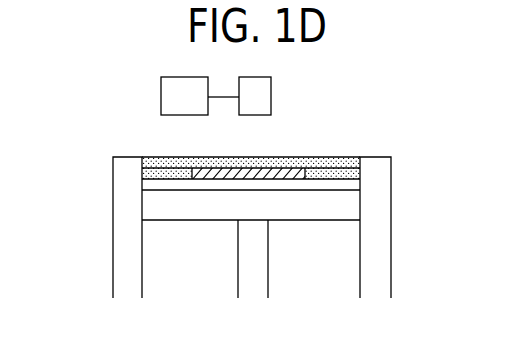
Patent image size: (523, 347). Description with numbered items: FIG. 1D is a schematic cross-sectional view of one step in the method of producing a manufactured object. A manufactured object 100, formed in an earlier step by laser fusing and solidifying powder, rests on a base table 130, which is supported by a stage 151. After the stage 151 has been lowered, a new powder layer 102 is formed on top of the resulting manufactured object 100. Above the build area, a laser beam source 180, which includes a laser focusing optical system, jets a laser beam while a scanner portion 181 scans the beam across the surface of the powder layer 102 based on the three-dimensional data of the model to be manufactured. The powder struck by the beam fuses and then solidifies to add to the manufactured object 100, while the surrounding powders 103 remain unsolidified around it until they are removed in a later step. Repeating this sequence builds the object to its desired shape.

The manufactured object 100 is at (207, 172).
The powder layer 102 is at (284, 160).
The powders which have remained unsolidified 103 is at (335, 167).
The base table 130 is at (357, 185).
The stage 151 is at (357, 208).
The laser beam source 180 is at (161, 97).
The scanner portion 181 is at (271, 97).